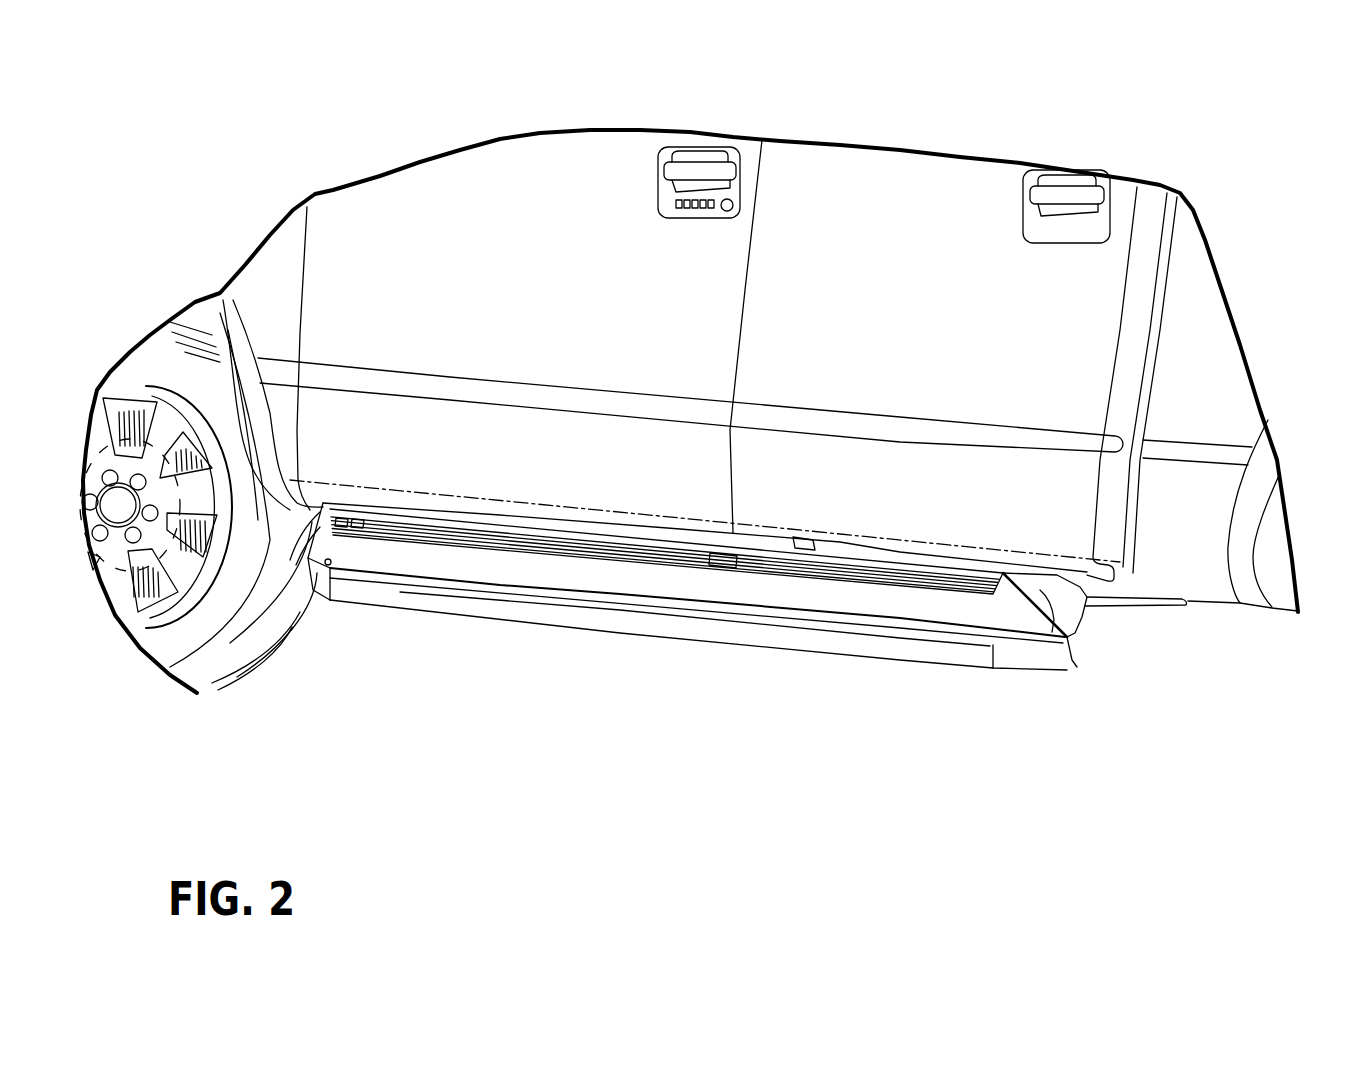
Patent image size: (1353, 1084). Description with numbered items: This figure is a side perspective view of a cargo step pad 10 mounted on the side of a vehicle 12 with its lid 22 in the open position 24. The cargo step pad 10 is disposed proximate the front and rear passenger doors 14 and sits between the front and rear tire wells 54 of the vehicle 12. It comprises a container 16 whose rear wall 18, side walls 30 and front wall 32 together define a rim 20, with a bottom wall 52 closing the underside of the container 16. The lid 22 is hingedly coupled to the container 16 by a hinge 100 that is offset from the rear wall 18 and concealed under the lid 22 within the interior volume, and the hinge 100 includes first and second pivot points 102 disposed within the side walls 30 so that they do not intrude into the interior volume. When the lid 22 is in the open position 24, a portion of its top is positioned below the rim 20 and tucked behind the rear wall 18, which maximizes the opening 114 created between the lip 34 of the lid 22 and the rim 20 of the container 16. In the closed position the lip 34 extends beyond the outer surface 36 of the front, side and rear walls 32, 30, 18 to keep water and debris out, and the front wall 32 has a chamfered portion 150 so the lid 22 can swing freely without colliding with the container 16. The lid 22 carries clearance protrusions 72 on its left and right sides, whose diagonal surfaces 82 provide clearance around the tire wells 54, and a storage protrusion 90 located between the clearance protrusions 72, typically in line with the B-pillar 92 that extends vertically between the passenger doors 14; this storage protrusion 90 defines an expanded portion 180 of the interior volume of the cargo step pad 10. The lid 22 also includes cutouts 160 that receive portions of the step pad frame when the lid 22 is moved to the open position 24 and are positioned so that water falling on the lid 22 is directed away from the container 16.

The cargo step pad 10 is at (754, 619).
The vehicle 12 is at (1187, 297).
The front and rear passenger doors 14 is at (485, 195).
The container 16 is at (433, 613).
The rear wall 18 is at (880, 605).
The rim 20 is at (593, 605).
The lid 22 is at (965, 548).
The open position 24 is at (1022, 698).
The side walls 30 is at (1053, 658).
The front wall 32 is at (643, 623).
The lip 34 is at (873, 555).
The outer surface 36 is at (533, 613).
The bottom wall 52 is at (690, 607).
The front and rear tire wells 54 is at (225, 320).
The clearance protrusions 72 is at (1100, 600).
The diagonal surfaces 82 is at (1050, 603).
The storage protrusion 90 is at (793, 540).
The B-pillar 92 is at (752, 245).
The hinge 100 is at (347, 518).
The pivot points 102 is at (323, 567).
The opening 114 is at (643, 543).
The chamfered portion 150 is at (767, 623).
The cutouts 160 is at (312, 530).
The expanded portion 180 is at (760, 560).